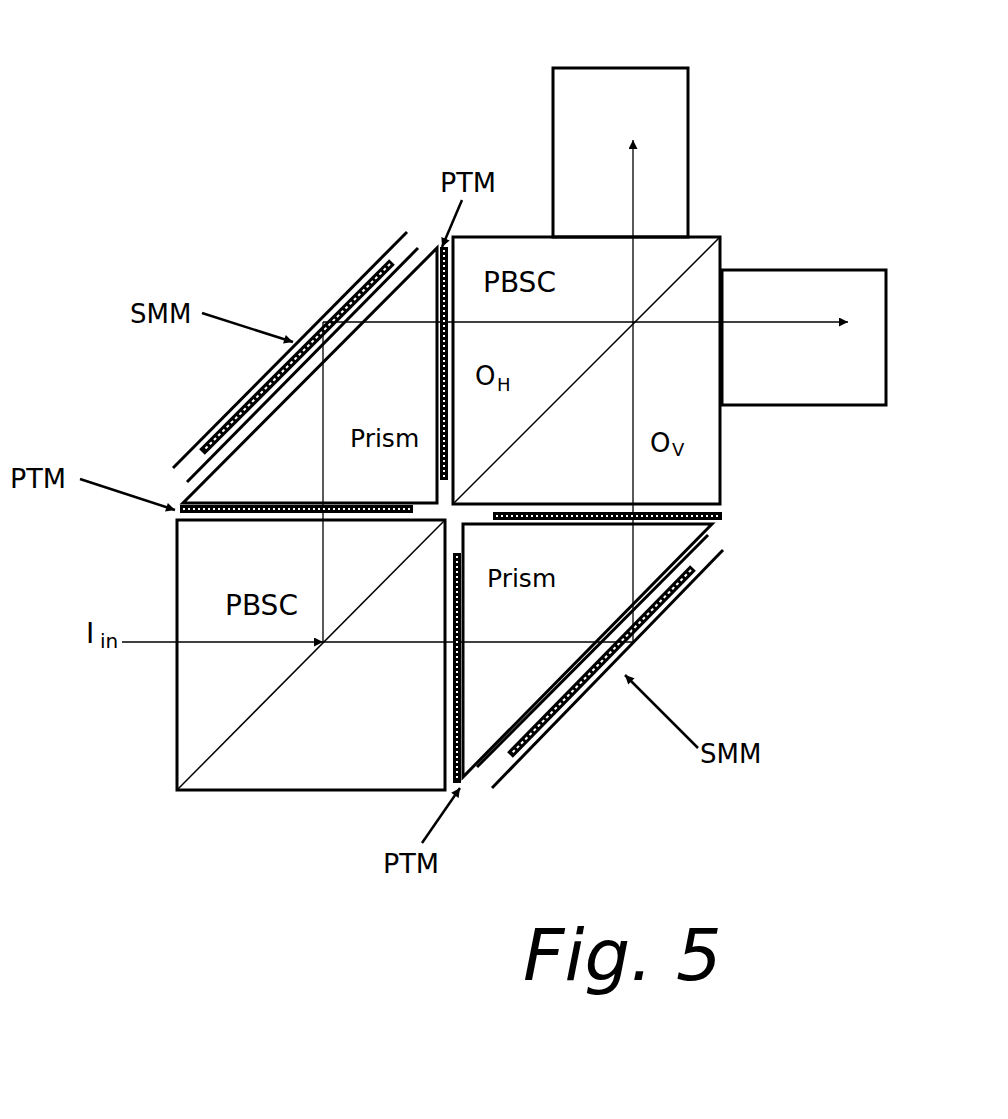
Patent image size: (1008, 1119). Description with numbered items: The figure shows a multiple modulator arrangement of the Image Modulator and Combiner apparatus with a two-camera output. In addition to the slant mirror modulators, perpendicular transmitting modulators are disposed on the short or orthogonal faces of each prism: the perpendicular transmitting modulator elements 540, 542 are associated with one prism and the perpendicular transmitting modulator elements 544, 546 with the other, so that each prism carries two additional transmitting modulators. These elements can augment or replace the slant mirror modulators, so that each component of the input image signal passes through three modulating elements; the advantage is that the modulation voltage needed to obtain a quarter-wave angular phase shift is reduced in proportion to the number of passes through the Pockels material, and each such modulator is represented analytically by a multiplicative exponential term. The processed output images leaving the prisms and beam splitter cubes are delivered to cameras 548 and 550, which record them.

The perpendicular transmitting modulator element 540 is at (434, 250).
The perpendicular transmitting modulator element 542 is at (177, 515).
The perpendicular transmitting modulator element 544 is at (722, 514).
The perpendicular transmitting modulator element 546 is at (462, 778).
The camera 548 is at (612, 68).
The camera 550 is at (800, 270).